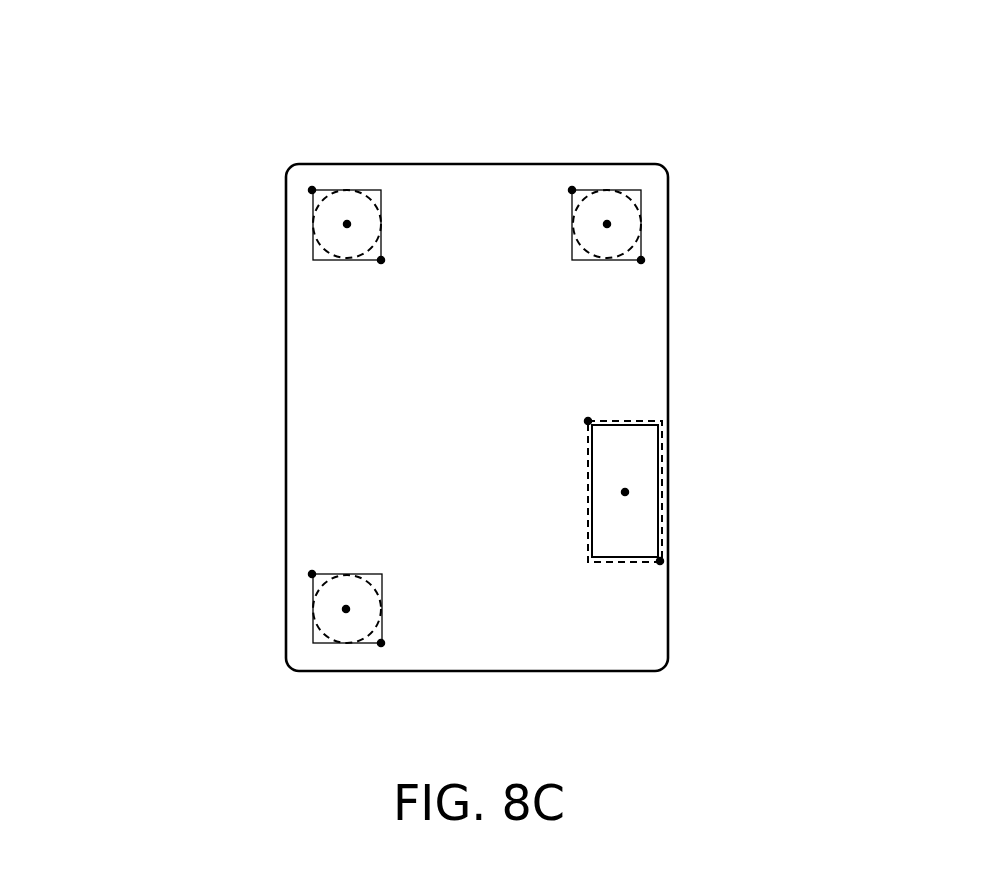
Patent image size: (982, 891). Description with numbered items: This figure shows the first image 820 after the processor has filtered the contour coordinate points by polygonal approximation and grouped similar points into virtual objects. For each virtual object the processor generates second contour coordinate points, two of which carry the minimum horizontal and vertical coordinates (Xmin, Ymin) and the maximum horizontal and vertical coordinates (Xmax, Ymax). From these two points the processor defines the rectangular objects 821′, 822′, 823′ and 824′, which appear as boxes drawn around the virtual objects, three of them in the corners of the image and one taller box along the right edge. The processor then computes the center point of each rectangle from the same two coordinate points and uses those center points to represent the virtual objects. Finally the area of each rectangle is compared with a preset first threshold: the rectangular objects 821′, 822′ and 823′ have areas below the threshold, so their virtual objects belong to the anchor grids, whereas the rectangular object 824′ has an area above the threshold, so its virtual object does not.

The first image 820 is at (462, 107).
The rectangular object 821′ is at (312, 574).
The rectangular object 822′ is at (381, 260).
The rectangular object 823′ is at (641, 199).
The rectangular object 824′ is at (661, 446).